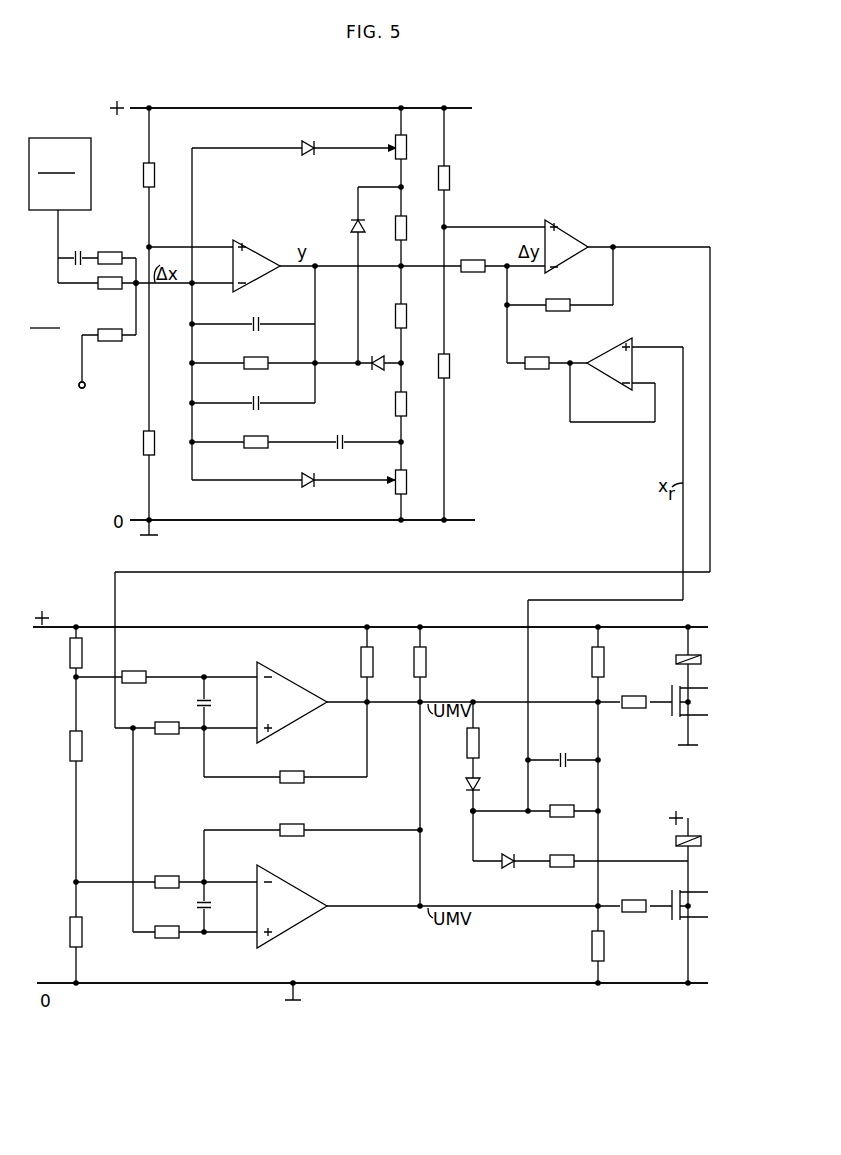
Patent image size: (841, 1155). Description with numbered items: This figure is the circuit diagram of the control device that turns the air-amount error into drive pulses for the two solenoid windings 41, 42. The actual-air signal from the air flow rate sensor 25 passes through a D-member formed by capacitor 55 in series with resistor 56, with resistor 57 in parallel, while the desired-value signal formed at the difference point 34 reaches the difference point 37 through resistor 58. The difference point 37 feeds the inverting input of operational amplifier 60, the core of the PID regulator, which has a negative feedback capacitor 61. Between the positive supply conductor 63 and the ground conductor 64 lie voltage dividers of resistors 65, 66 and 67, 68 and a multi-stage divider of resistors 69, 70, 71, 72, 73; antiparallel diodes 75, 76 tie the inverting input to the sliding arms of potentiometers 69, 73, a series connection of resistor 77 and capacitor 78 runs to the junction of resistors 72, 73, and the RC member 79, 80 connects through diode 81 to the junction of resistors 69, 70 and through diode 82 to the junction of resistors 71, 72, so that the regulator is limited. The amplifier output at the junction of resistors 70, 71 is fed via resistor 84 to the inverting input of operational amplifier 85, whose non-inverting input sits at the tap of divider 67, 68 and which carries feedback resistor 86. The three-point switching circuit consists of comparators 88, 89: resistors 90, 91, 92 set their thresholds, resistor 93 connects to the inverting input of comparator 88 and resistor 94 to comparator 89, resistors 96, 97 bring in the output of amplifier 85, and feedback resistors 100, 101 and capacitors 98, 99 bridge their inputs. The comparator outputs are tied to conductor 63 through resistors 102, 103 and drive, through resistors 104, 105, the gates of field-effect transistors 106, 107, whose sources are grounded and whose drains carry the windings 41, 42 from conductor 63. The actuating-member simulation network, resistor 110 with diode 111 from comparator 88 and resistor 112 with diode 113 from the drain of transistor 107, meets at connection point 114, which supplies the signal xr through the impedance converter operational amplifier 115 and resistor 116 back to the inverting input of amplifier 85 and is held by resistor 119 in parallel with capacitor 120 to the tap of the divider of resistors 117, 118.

The air flow rate sensor 25 is at (58, 138).
The differentiator (difference point) 34 is at (82, 389).
The differentiator (difference point) 37 is at (137, 287).
The capacitor 55 is at (78, 250).
The resistor 56 is at (110, 253).
The resistor 57 is at (116, 289).
The resistor 58 is at (118, 341).
The operational amplifier 60 is at (258, 245).
The negative feedback capacitor 61 is at (258, 318).
The power supply conductor (+ pole) 63 is at (470, 108).
The power supply conductor (ground) 64 is at (425, 521).
The resistor 65 is at (144, 172).
The resistor 66 is at (144, 445).
The resistor 67 is at (449, 178).
The resistor 68 is at (449, 370).
The potentiometer (resistor) 69 is at (406, 147).
The resistor 70 is at (406, 229).
The resistor 71 is at (406, 318).
The resistor 72 is at (406, 408).
The potentiometer (resistor) 73 is at (406, 487).
The diode 75 is at (311, 141).
The diode 76 is at (313, 474).
The resistor 77 is at (258, 441).
The capacitor 78 is at (342, 450).
The resistor of RC member 79 is at (258, 362).
The capacitor of RC member 80 is at (258, 402).
The diode 81 is at (351, 228).
The diode 82 is at (378, 357).
The resistor 84 is at (476, 264).
The operational amplifier 85 is at (575, 235).
The feedback resistor 86 is at (560, 303).
The comparator (threshold value switch) 88 is at (273, 678).
The comparator (threshold value switch) 89 is at (300, 922).
The resistor 90 is at (70, 657).
The resistor 91 is at (70, 750).
The resistor 92 is at (70, 935).
The resistor 93 is at (138, 674).
The resistor 94 is at (164, 878).
The resistor 96 is at (164, 735).
The resistor 97 is at (172, 940).
The capacitor 98 is at (196, 702).
The capacitor 99 is at (212, 905).
The feedback resistor 100 is at (296, 772).
The feedback resistor 101 is at (296, 826).
The resistor 102 is at (362, 662).
The resistor 103 is at (426, 662).
The resistor 104 is at (622, 710).
The resistor 105 is at (622, 914).
The field-effect transistor 106 is at (668, 690).
The field-effect transistor 107 is at (668, 890).
The resistor 110 is at (468, 742).
The diode 111 is at (479, 784).
The resistor 112 is at (557, 867).
The diode 113 is at (505, 867).
The connection point 114 is at (475, 815).
The operational amplifier (impedance converter) 115 is at (615, 373).
The resistor 116 is at (530, 370).
The resistor 117 is at (592, 662).
The resistor 118 is at (592, 945).
The resistor 119 is at (553, 806).
The capacitor 120 is at (565, 752).
The solenoid winding 41 is at (676, 659).
The solenoid winding 42 is at (676, 841).